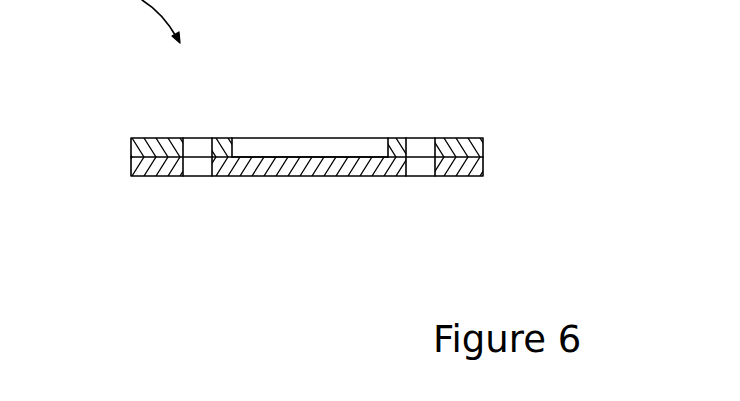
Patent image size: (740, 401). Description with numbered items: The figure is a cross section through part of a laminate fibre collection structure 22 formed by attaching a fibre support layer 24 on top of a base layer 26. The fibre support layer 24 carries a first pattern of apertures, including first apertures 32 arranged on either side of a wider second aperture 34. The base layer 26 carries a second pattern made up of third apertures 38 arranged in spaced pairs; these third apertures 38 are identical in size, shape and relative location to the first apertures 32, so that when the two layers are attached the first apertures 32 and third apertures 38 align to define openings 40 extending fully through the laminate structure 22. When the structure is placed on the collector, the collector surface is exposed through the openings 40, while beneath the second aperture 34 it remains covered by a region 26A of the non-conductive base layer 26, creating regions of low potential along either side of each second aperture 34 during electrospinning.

The laminate fibre collection structure 22 is at (515, 130).
The fibre support layer 24 is at (166, 138).
The base layer 26 is at (166, 176).
The region of the non-conductive base layer 26A is at (320, 176).
The first apertures 32 is at (210, 148).
The second aperture 34 is at (390, 150).
The third apertures 38 is at (213, 178).
The openings 40 is at (202, 176).